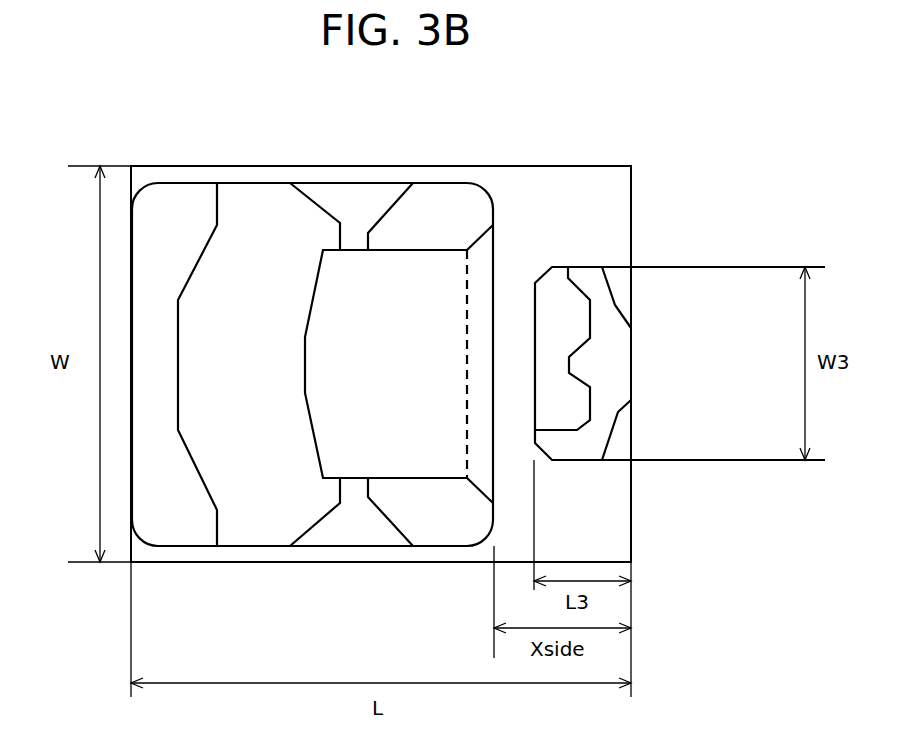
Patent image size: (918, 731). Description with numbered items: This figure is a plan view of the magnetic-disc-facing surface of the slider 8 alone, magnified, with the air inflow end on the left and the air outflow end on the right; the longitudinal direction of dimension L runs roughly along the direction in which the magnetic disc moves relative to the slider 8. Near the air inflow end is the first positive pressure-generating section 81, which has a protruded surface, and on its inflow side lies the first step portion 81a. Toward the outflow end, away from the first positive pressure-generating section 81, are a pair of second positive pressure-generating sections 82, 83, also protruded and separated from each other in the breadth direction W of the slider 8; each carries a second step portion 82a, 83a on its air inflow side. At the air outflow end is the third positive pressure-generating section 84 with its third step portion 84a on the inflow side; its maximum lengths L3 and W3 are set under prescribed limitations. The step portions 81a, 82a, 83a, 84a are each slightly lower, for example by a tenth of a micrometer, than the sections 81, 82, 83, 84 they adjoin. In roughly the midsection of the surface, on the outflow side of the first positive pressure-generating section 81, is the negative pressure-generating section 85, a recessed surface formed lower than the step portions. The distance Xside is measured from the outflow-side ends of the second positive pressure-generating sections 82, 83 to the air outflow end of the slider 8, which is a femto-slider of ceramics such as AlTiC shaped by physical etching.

The slider 8 is at (700, 147).
The first positive pressure-generating section 81 is at (298, 243).
The first step portion 81a is at (180, 243).
The second positive pressure-generating section 82 is at (443, 223).
The second step portion 82a is at (358, 220).
The second positive pressure-generating section 83 is at (465, 520).
The second step portion 83a is at (360, 520).
The third positive pressure-generating section 84 is at (602, 362).
The third step portion 84a is at (565, 317).
The negative pressure-generating section 85 is at (398, 343).